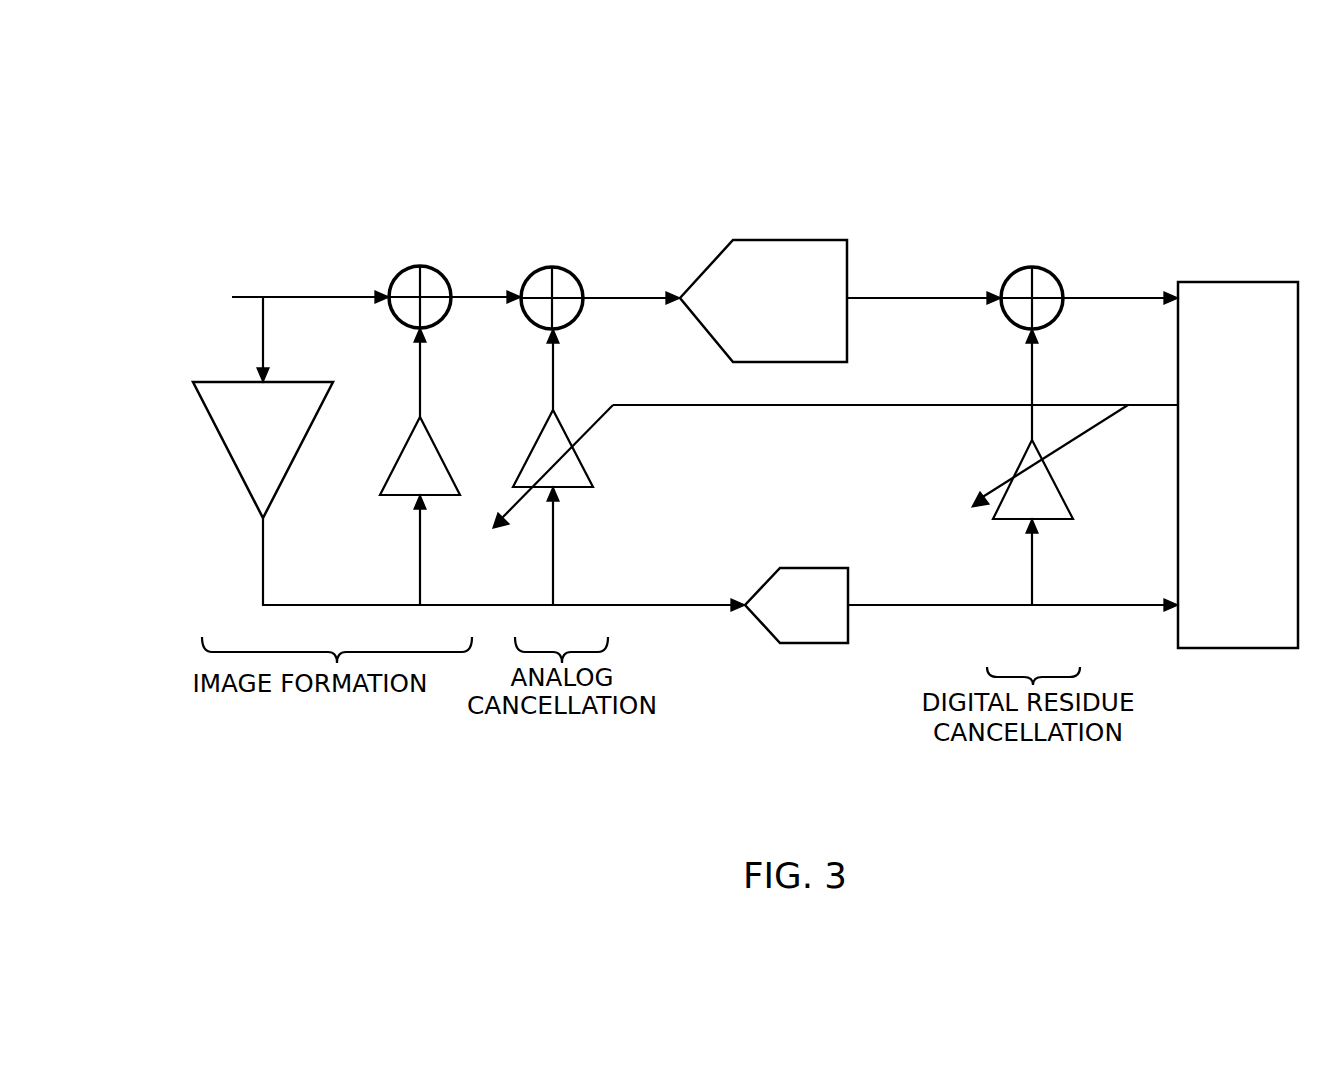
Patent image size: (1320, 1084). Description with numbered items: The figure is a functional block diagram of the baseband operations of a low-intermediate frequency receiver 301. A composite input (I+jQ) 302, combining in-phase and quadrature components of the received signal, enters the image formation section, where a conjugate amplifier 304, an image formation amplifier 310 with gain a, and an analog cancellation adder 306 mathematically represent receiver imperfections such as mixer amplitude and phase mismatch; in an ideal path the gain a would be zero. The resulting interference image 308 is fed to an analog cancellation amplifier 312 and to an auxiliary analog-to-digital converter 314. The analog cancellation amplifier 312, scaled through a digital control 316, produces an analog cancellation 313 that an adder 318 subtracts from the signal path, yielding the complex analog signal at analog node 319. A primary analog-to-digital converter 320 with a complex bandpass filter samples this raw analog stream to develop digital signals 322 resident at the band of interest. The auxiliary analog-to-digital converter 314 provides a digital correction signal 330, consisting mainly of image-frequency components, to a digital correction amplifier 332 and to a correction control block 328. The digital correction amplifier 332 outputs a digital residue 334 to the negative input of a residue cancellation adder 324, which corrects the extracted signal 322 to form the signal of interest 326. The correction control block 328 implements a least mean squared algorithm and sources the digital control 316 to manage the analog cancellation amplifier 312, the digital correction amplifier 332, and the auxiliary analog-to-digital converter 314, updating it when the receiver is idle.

The low-intermediate frequency receiver 301 is at (230, 155).
The composite input (I+jQ) 302 is at (275, 297).
The conjugate amplifier 304 is at (225, 395).
The analog cancellation adder 306 is at (430, 288).
The interference image 308 is at (263, 550).
The image formation amplifier 310 is at (402, 475).
The analog cancellation amplifier 312 is at (568, 467).
The analog cancellation 313 is at (553, 368).
The auxiliary analog-to-digital converter 314 is at (762, 610).
The digital control 316 is at (627, 403).
The adder 318 is at (563, 290).
The analog node 319 is at (605, 296).
The primary analog-to-digital converter 320 is at (743, 252).
The digital signals 322 is at (865, 300).
The residue cancellation adder 324 is at (1043, 287).
The signal of interest 326 is at (1102, 298).
The correction control block 328 is at (1238, 465).
The digital correction signal 330 is at (857, 590).
The digital correction amplifier 332 is at (1037, 475).
The digital residue 334 is at (1033, 425).